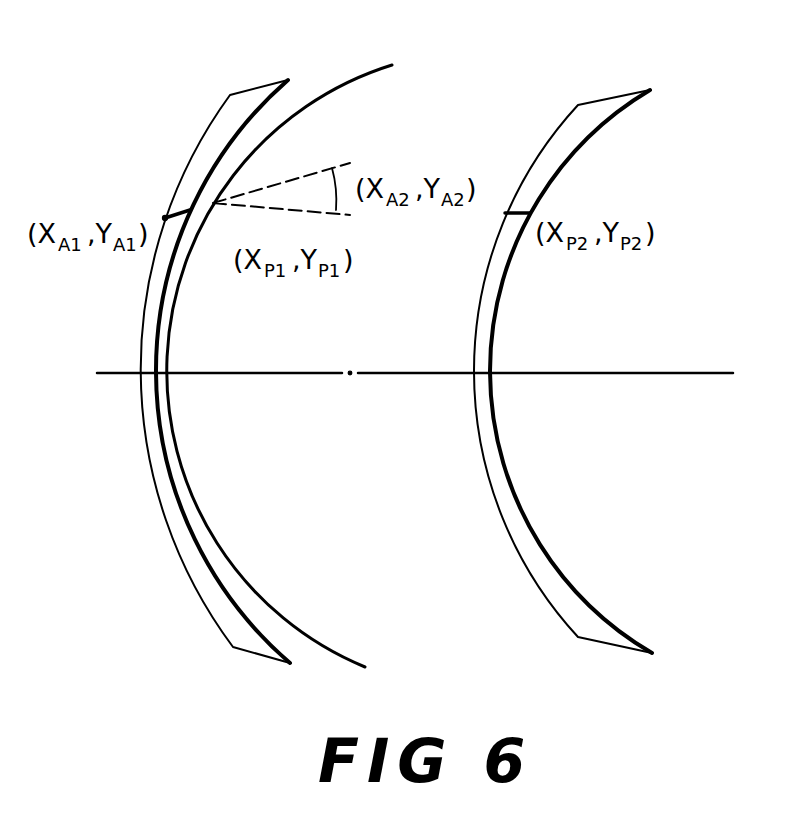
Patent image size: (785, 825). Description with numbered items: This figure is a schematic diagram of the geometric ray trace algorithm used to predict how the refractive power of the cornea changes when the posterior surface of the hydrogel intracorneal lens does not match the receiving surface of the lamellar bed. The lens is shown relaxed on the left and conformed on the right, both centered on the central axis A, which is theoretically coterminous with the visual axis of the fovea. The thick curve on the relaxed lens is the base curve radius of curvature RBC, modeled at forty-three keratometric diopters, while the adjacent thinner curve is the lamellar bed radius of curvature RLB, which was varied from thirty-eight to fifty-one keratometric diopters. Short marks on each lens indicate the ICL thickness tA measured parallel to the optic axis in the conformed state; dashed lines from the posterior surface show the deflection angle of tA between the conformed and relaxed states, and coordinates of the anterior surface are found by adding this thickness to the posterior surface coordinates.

The base curve radius of curvature RBC is at (260, 107).
The lamellar bed radius of curvature RLB is at (362, 72).
The ICL thickness parallel to optic axis in conformed state tA is at (517, 207).
The central axis A is at (613, 373).